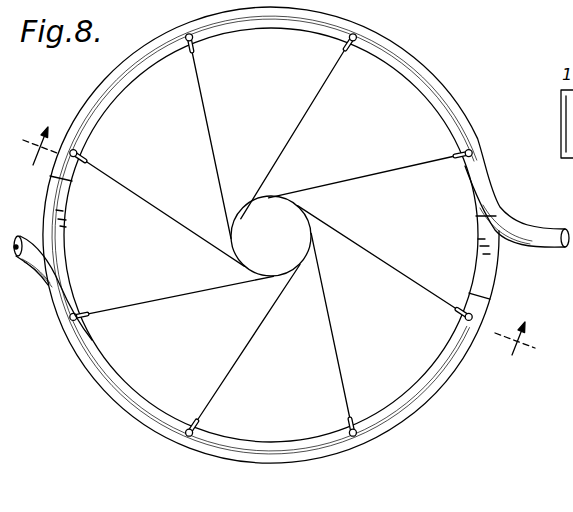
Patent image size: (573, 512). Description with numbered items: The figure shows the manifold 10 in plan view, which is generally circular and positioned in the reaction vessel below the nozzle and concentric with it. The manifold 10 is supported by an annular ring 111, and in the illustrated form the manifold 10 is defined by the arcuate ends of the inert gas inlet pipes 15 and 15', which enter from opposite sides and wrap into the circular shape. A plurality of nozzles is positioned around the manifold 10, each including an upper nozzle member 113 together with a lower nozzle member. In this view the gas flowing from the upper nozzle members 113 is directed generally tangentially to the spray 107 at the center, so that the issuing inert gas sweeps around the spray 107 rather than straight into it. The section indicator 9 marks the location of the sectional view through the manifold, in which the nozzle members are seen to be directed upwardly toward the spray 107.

The manifold 10 is at (452, 52).
The annular ring 111 is at (478, 265).
The spray 107 is at (311, 242).
The upper nozzle member 113 is at (343, 49).
The inert gas inlet pipe 15 is at (53, 288).
The inert gas inlet pipe 15' is at (517, 206).
The section line for FIG. 9 is at (277, 255).